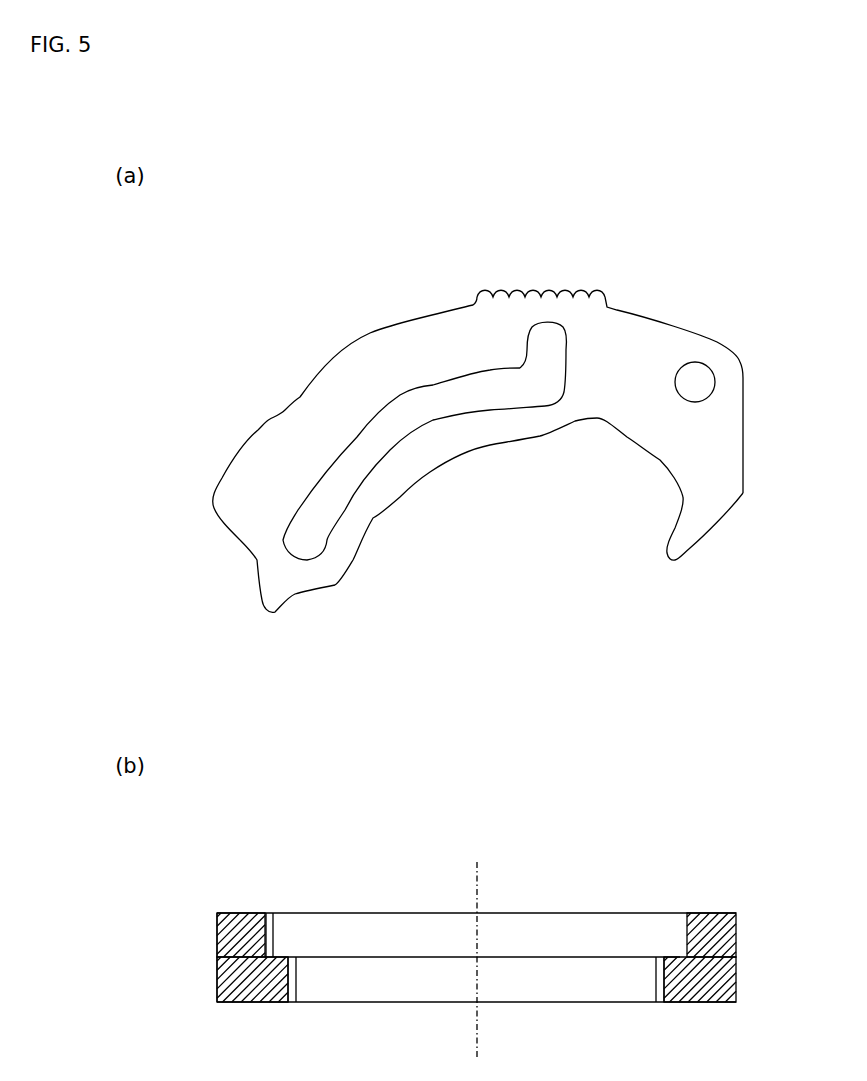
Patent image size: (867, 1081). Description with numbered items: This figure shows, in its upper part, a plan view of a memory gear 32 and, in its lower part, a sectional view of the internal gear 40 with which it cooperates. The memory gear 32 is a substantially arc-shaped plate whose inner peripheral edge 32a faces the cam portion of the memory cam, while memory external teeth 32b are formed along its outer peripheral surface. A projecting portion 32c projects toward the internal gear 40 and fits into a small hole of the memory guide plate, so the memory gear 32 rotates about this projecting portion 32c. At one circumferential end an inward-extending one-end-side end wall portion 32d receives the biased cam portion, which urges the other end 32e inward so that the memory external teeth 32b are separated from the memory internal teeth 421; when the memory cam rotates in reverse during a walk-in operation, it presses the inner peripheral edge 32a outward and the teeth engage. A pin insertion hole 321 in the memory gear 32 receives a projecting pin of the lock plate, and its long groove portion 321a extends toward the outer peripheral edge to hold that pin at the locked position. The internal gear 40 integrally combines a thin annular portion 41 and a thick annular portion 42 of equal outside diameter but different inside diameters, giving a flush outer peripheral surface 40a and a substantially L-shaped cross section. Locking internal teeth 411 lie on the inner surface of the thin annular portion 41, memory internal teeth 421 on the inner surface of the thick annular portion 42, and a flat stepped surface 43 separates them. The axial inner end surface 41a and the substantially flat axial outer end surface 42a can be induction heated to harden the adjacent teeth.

The memory gear 32 is at (343, 338).
The inner peripheral edge 32a is at (400, 500).
The memory external teeth 32b is at (502, 291).
The projecting portion 32c is at (697, 382).
The one-end-side end wall portion 32d is at (676, 561).
The other end 32e is at (257, 582).
The pin insertion hole 321 is at (454, 418).
The long groove portion 321a is at (547, 378).
The internal gear 40 is at (348, 855).
The outer peripheral surface 40a is at (217, 963).
The thin annular portion 41 is at (217, 920).
The axial inner end surface 41a is at (714, 913).
The locking internal teeth 411 is at (273, 937).
The thick annular portion 42 is at (222, 990).
The axial outer end surface 42a is at (700, 1002).
The memory internal teeth 421 is at (297, 990).
The stepped surface 43 is at (672, 957).